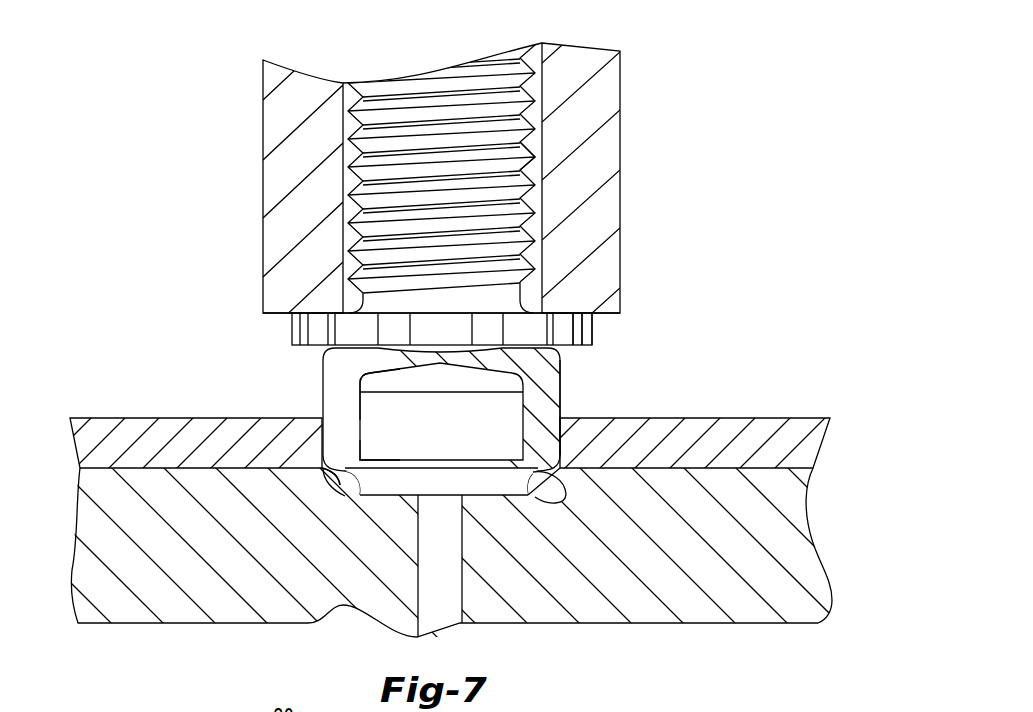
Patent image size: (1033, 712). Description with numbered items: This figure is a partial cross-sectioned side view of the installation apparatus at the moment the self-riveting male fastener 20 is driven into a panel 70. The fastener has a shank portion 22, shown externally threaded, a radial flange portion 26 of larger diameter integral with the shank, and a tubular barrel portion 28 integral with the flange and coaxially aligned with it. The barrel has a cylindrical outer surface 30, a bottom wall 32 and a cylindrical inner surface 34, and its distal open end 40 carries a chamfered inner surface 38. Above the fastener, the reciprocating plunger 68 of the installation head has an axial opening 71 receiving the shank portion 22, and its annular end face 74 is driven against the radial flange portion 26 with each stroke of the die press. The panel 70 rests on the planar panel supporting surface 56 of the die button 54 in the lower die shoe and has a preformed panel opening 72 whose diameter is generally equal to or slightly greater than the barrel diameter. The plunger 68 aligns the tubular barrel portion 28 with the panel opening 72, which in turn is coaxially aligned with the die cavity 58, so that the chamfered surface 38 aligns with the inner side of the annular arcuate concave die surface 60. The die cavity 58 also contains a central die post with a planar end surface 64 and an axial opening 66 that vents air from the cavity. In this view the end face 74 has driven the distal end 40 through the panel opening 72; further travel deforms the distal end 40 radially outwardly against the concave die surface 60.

The self-riveting male fastener 20 is at (201, 368).
The shank portion 22 is at (417, 158).
The radial flange portion 26 is at (392, 321).
The tubular barrel portion 28 is at (645, 384).
The cylindrical outer surface 30 is at (541, 354).
The bottom wall 32 is at (441, 411).
The cylindrical inner surface 34 is at (330, 385).
The chamfered inner surface 38 is at (384, 435).
The distal open end 40 is at (532, 506).
The die button 54 is at (514, 354).
The planar panel supporting surface 56 is at (716, 356).
The die cavity 58 is at (441, 452).
The annular arcuate concave die surface 60 is at (296, 505).
The planar end surface 64 is at (520, 466).
The axial opening 66 is at (440, 566).
The reciprocating plunger 68 is at (492, 198).
The panel 70 is at (373, 356).
The axial opening 71 is at (611, 173).
The panel preformed opening 72 is at (246, 488).
The annular end face 74 is at (653, 288).